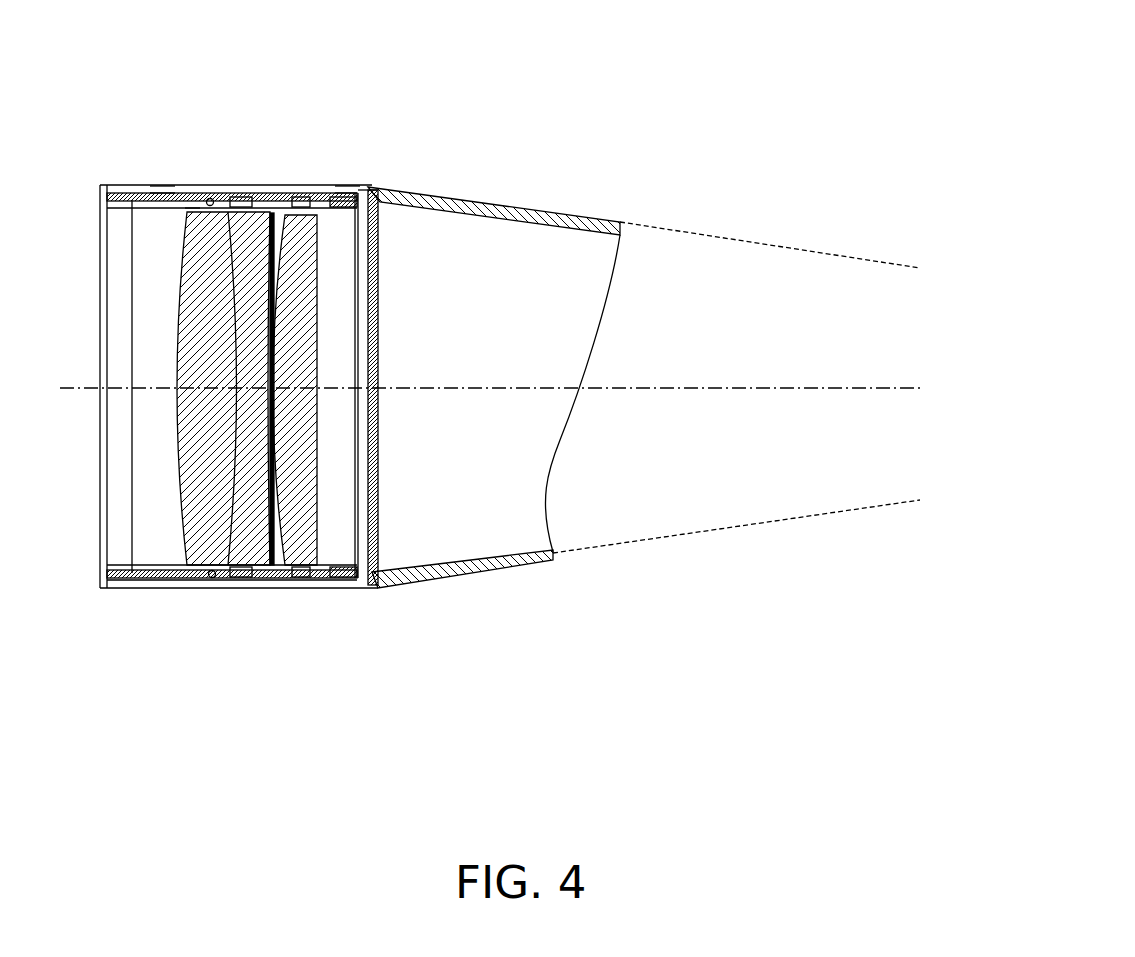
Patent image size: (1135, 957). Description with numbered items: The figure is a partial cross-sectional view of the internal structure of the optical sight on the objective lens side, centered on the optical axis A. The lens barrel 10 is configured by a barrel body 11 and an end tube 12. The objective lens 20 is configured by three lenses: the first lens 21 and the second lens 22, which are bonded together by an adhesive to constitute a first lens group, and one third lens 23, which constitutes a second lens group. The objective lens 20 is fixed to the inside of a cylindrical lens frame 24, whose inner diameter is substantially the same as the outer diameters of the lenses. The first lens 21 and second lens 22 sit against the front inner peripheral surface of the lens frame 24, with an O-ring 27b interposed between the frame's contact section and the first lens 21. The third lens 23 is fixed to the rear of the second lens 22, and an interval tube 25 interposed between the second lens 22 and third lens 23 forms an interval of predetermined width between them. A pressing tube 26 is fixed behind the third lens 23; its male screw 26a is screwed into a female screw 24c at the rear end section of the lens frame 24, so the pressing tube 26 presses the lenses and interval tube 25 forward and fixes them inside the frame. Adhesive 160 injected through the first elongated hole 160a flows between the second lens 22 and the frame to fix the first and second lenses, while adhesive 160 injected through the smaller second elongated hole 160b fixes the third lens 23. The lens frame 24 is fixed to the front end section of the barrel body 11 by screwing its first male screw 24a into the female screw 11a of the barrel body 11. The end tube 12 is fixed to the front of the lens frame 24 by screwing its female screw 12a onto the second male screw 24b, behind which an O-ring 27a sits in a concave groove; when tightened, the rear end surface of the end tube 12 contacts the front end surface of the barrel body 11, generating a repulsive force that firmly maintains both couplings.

The lens barrel 10 is at (597, 46).
The barrel body 11 is at (576, 222).
The female screw 11a is at (345, 190).
The end tube 12 is at (115, 186).
The female screw 12a is at (163, 186).
The objective lens 20 is at (428, 250).
The first lens 21 is at (213, 270).
The second lens 22 is at (258, 312).
The third lens 23 is at (316, 371).
The lens frame 24 is at (165, 210).
The first male screw 24a is at (370, 155).
The second male screw 24b is at (187, 147).
The female screw 24c is at (385, 190).
The interval tube 25 is at (272, 580).
The pressing tube 26 is at (340, 533).
The male screw 26a is at (435, 167).
The O-ring 27a is at (204, 190).
The O-ring 27b is at (185, 212).
The adhesive 160 is at (253, 190).
The first elongated hole 160a is at (272, 366).
The second elongated hole 160b is at (361, 396).
The optical axis A is at (535, 387).